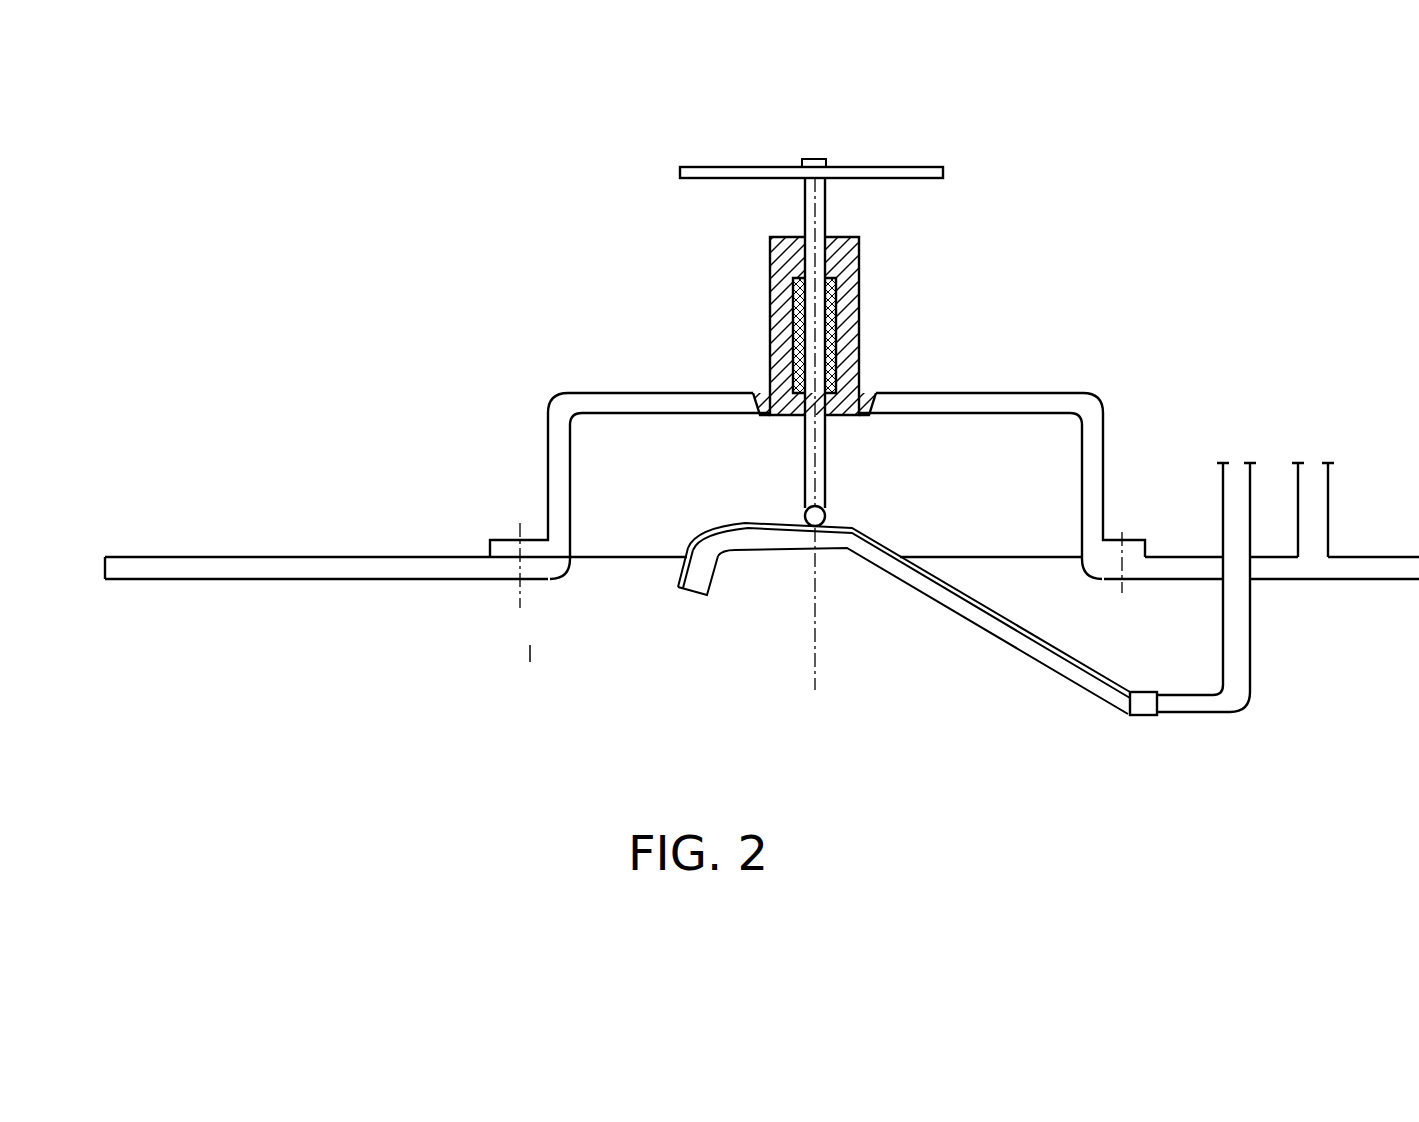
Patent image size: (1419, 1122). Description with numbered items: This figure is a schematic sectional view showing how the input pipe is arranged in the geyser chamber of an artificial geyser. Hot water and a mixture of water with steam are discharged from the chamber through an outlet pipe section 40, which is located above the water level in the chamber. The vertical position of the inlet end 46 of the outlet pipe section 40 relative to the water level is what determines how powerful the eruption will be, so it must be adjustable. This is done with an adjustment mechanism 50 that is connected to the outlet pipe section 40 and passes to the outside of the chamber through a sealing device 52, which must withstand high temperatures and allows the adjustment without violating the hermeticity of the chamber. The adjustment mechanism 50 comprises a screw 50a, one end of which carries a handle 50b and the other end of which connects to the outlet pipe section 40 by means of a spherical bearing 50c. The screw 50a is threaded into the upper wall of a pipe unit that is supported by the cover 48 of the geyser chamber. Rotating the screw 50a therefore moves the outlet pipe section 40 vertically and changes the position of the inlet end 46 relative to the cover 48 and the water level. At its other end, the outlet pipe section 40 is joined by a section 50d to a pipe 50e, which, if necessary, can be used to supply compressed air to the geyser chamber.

The outlet pipe section 40 is at (933, 592).
The inlet end 46 is at (702, 575).
The cover 48 is at (585, 403).
The adjustment mechanism 50 is at (722, 263).
The screw 50a is at (818, 212).
The handle 50b is at (905, 177).
The spherical bearing 50c is at (806, 512).
The section 50d is at (1233, 688).
The pipe 50e is at (1242, 498).
The sealing device 52 is at (775, 332).